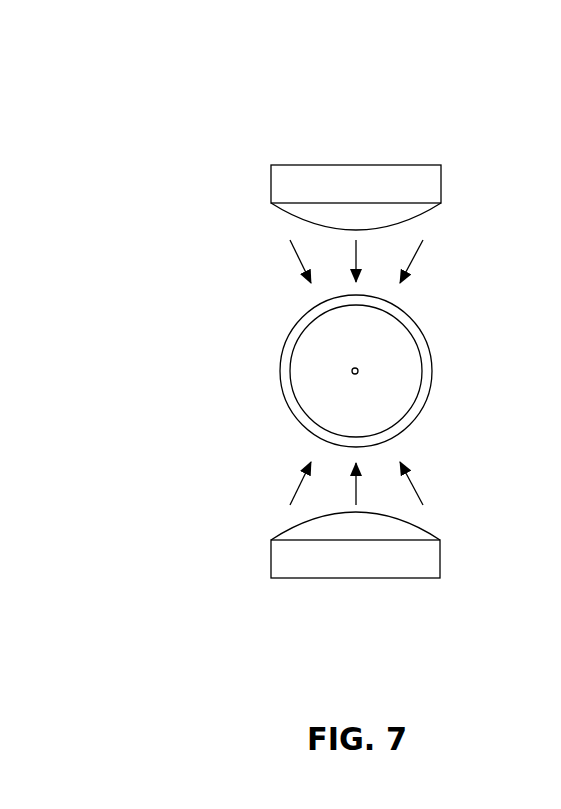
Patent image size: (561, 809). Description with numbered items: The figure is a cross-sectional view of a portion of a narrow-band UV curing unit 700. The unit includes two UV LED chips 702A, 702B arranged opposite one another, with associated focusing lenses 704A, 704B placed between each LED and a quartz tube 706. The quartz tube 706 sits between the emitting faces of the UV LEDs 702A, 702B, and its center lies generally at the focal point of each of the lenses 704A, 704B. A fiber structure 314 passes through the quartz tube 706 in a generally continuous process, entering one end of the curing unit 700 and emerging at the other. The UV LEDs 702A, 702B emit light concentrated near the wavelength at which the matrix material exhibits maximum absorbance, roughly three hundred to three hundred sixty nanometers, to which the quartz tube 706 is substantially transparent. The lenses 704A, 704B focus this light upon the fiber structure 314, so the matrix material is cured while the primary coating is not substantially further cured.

The narrow-band UV curing unit 700 is at (122, 102).
The UV LED 702A is at (352, 165).
The UV LED 702B is at (352, 580).
The focusing lens 704A is at (285, 217).
The focusing lens 704B is at (285, 528).
The quartz tube 706 is at (281, 368).
The fiber structure 314 is at (358, 369).